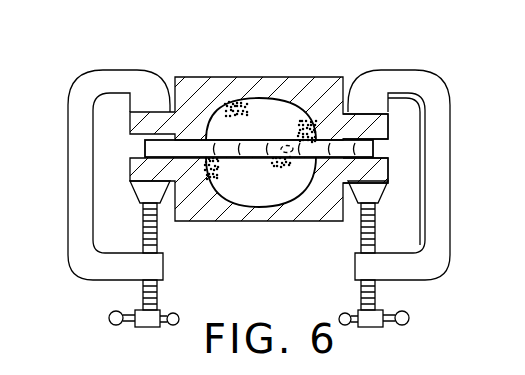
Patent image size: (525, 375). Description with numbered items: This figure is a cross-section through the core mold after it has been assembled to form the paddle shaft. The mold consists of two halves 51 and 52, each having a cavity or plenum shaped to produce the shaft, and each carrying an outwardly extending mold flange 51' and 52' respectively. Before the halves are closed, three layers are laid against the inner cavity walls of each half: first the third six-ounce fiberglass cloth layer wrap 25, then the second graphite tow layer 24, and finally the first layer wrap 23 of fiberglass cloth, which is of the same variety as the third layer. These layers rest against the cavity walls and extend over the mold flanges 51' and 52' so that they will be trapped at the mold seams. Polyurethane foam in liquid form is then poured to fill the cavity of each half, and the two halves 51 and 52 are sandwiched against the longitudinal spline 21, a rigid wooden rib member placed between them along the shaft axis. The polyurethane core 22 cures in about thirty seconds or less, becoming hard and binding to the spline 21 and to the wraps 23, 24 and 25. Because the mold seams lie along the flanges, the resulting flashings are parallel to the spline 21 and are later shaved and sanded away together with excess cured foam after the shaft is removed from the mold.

The longitudinal spline 21 is at (375, 150).
The polyurethane foam core 22 is at (287, 135).
The first layer wrap 23 is at (365, 161).
The second graphite tow layer 24 is at (365, 161).
The third fiberglass cloth layer wrap 25 is at (334, 78).
The mold half 51 is at (243, 89).
The mold flange 51' is at (424, 122).
The mold half 52 is at (233, 215).
The mold flange 52' is at (424, 187).